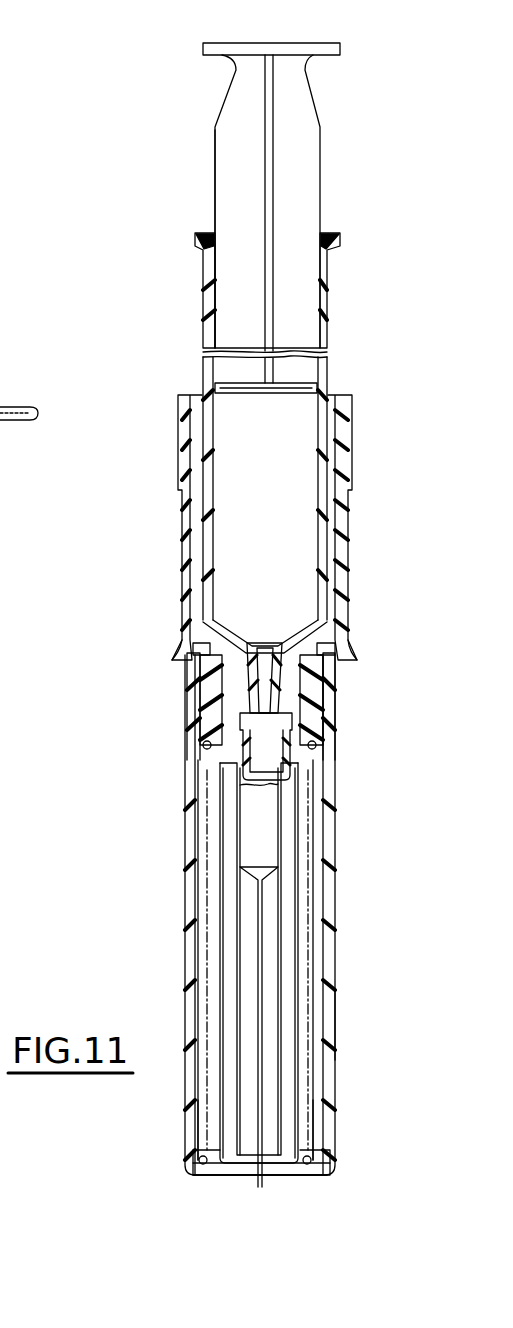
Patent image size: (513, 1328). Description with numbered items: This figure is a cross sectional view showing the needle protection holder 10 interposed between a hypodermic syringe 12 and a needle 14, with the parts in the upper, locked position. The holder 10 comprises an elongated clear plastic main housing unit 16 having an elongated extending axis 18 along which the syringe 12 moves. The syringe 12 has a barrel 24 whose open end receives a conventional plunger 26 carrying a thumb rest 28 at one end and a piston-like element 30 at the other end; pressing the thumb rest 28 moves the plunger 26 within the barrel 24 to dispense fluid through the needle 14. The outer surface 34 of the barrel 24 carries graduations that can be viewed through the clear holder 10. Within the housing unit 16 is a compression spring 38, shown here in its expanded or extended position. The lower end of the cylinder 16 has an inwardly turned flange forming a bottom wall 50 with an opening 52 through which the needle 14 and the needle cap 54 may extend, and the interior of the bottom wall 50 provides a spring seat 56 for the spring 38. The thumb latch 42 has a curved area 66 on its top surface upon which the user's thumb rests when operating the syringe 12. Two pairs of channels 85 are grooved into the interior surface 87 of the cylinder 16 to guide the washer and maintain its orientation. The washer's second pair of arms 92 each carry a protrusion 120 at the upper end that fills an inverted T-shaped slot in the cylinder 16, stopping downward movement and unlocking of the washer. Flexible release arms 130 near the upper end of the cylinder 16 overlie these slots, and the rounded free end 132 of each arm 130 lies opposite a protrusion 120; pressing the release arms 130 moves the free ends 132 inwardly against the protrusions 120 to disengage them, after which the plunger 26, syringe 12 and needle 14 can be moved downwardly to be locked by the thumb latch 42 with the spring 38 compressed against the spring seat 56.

The needle protection holder 10 is at (366, 860).
The hypodermic syringe 12 is at (356, 125).
The needle 14 is at (262, 950).
The main housing unit 16 is at (195, 836).
The elongated extending axis 18 is at (272, 27).
The syringe barrel 24 is at (330, 270).
The plunger 26 is at (215, 160).
The thumb rest 28 is at (340, 50).
The piston-like element 30 is at (310, 382).
The outer surface of the barrel 34 is at (330, 330).
The compression spring 38 is at (327, 1022).
The thumb latch 42 is at (0, 425).
The bottom wall 50 is at (193, 1170).
The opening 52 is at (230, 1170).
The needle cap 54 is at (275, 1080).
The spring seat 56 is at (330, 1152).
The curved area 66 is at (3, 400).
The channels 85 is at (323, 788).
The interior surface 87 is at (200, 1121).
The second pair of arms 92 is at (190, 700).
The protrusion 120 is at (190, 665).
The flexible release arms 130 is at (180, 527).
The free end 132 is at (178, 652).